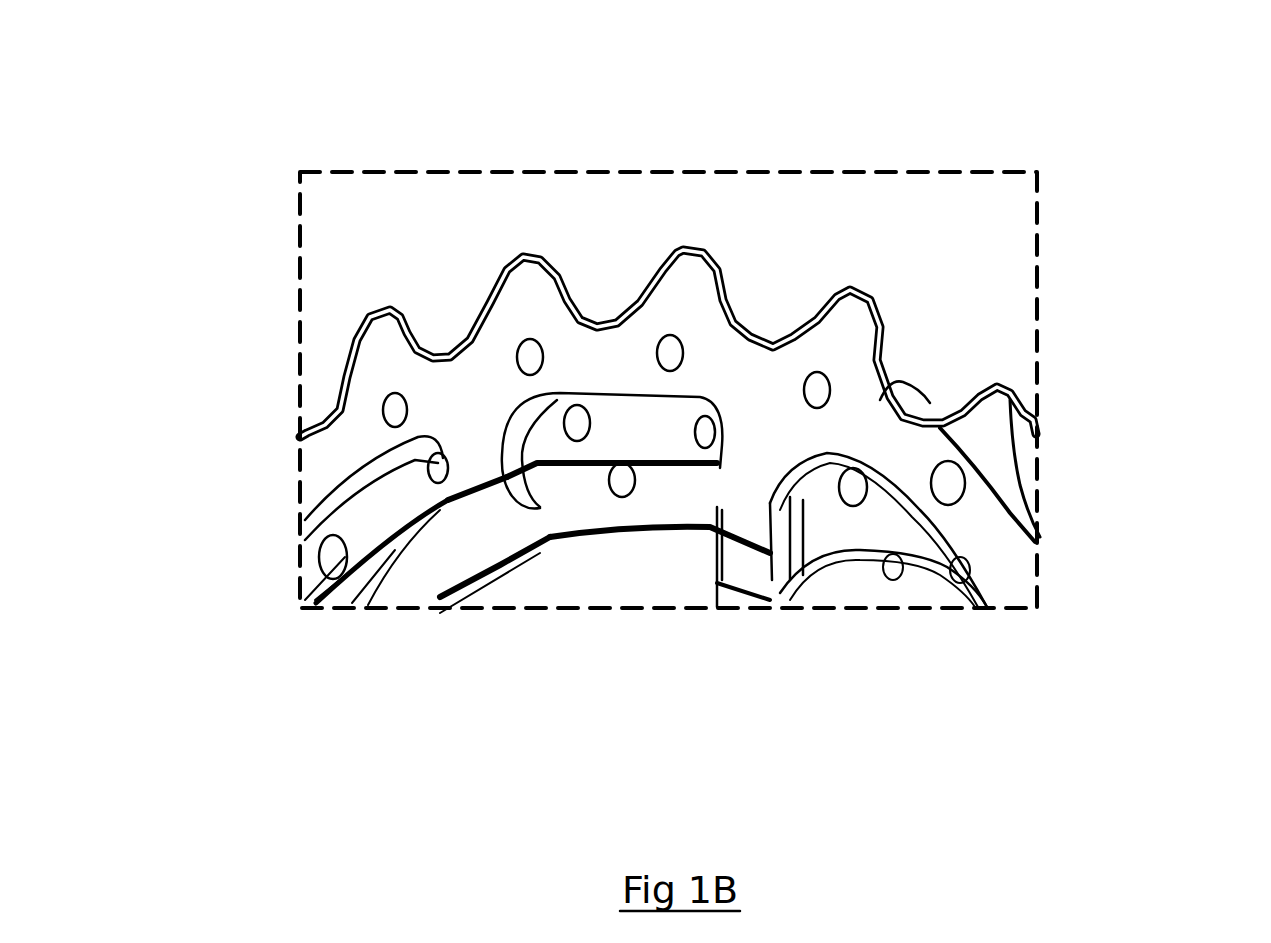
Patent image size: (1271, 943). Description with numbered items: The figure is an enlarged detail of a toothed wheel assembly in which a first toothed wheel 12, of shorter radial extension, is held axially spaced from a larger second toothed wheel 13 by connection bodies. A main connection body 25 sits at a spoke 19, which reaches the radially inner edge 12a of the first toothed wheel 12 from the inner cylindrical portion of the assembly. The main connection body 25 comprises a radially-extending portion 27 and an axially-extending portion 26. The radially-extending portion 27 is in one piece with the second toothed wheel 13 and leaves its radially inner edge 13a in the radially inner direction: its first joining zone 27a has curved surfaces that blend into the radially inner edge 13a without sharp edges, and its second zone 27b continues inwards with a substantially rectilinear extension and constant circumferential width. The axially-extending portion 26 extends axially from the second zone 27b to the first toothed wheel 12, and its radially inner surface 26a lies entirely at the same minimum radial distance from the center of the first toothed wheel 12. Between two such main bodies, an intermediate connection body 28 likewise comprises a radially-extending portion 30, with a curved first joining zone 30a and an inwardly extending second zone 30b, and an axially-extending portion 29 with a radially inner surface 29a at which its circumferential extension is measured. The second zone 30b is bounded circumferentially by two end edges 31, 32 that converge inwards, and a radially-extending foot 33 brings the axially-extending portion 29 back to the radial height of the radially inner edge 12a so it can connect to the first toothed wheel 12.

The first toothed wheel 12 is at (930, 568).
The radially inner edge 12a is at (623, 467).
The second toothed wheel 13 is at (915, 454).
The radially inner edge 13a is at (360, 468).
The spoke 19 is at (728, 595).
The main connection body 25 is at (778, 438).
The axially-extending portion 26 is at (770, 537).
The radially inner surface 26a is at (752, 553).
The radially-extending portion 27 is at (748, 433).
The first joining zone 27a is at (775, 462).
The second zone 27b is at (742, 492).
The intermediate connection body 28 is at (467, 433).
The axially-extending portion 29 is at (485, 508).
The radially inner surface 29a is at (530, 520).
The radially-extending portion 30 is at (482, 453).
The first joining zone 30a is at (494, 417).
The second zone 30b is at (470, 457).
The end edge 31 is at (453, 480).
The end edge 32 is at (518, 453).
The radially-extending foot 33 is at (557, 483).